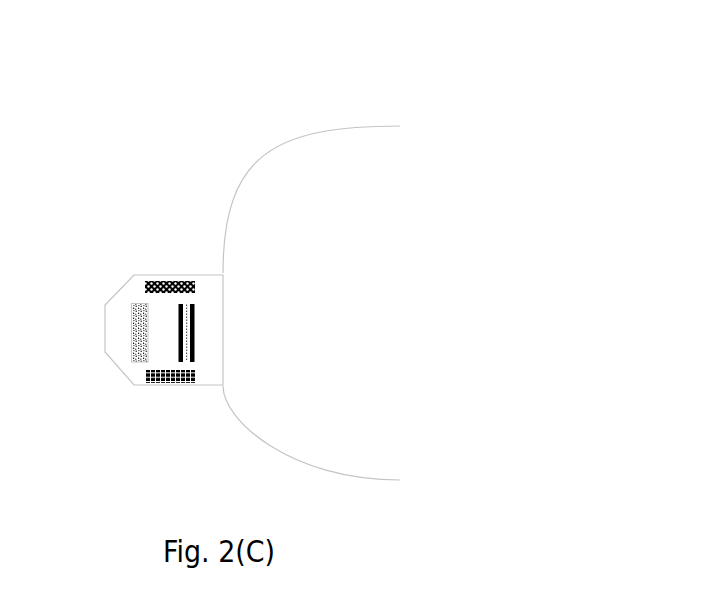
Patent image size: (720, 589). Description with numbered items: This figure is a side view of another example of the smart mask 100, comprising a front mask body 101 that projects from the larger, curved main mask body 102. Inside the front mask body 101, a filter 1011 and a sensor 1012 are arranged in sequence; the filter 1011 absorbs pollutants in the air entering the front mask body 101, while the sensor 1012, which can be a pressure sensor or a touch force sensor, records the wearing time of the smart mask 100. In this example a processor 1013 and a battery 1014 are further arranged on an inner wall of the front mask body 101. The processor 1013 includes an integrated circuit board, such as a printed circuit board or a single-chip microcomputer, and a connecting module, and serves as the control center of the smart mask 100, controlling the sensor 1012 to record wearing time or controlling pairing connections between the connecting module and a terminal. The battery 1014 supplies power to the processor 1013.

The smart mask 100 is at (228, 32).
The front mask body 101 is at (134, 288).
The main mask body 102 is at (315, 143).
The filter 1011 is at (134, 334).
The sensor 1012 is at (195, 345).
The processor 1013 is at (194, 383).
The battery 1014 is at (195, 287).